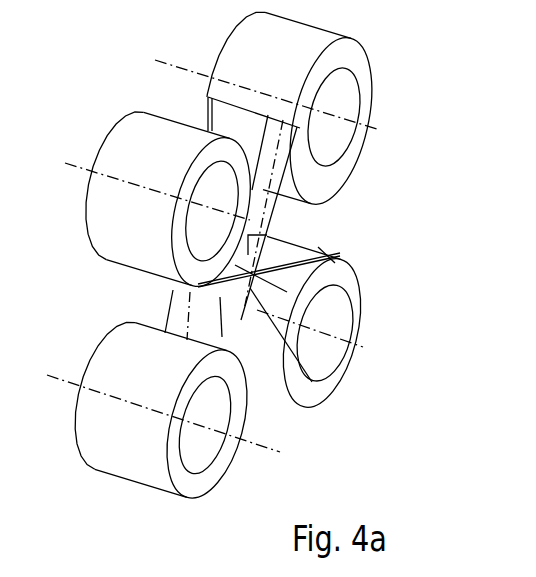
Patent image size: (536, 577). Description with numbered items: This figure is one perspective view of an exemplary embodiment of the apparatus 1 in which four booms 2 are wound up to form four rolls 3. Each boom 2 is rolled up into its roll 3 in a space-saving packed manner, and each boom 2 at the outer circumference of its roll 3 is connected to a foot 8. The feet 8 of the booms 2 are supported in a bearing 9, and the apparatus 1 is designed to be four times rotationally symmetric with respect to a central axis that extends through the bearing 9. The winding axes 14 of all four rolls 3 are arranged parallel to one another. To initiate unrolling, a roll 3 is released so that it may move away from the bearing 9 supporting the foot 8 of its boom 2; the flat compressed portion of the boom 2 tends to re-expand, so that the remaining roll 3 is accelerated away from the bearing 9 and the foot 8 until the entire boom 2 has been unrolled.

The apparatus 1 is at (400, 433).
The boom 2 is at (205, 297).
The roll 3 is at (98, 210).
The foot 8 is at (262, 248).
The bearing 9 is at (287, 292).
The winding axis 14 is at (372, 130).